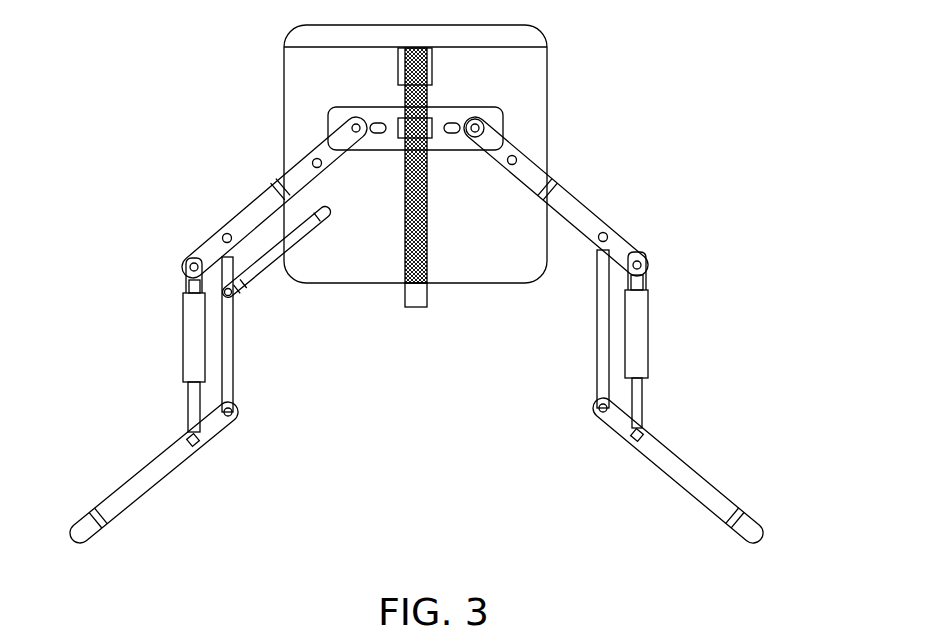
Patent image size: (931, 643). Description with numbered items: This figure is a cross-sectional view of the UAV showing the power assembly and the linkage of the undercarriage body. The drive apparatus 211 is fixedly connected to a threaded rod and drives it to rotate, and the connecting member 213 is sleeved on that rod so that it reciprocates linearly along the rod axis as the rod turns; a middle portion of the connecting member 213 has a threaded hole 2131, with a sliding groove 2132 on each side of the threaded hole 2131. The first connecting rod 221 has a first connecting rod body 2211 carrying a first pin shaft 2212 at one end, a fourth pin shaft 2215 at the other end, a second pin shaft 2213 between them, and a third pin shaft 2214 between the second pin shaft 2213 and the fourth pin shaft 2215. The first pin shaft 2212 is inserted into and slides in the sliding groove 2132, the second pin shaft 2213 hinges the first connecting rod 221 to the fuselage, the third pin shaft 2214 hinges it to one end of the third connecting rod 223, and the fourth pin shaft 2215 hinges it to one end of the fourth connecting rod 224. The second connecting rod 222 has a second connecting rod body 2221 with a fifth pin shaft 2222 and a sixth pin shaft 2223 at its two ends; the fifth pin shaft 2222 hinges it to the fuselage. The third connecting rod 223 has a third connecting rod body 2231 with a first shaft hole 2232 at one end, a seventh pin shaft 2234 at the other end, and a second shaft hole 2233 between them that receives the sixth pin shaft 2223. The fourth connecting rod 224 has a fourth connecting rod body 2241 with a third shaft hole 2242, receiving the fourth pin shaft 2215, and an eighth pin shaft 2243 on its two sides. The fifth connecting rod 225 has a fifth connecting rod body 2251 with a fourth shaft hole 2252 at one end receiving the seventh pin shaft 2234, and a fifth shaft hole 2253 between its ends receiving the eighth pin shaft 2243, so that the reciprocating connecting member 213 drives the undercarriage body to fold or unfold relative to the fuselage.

The drive apparatus 211 is at (545, 44).
The connecting member 213 is at (291, 160).
The threaded hole 2131 is at (398, 62).
The sliding groove 2132 is at (400, 122).
The first connecting rod 221 is at (603, 178).
The first connecting rod body 2211 is at (560, 190).
The first pin shaft 2212 is at (500, 118).
The second pin shaft 2213 is at (520, 152).
The third pin shaft 2214 is at (620, 238).
The fourth pin shaft 2215 is at (640, 258).
The second connecting rod 222 is at (646, 333).
The second connecting rod body 2221 is at (513, 225).
The fifth pin shaft 2222 is at (612, 362).
The sixth pin shaft 2223 is at (648, 282).
The third connecting rod 223 is at (145, 337).
The third connecting rod body 2231 is at (228, 323).
The first shaft hole 2232 is at (238, 240).
The second shaft hole 2233 is at (185, 268).
The seventh pin shaft 2234 is at (192, 337).
The fourth connecting rod 224 is at (238, 375).
The fourth connecting rod body 2241 is at (233, 338).
The third shaft hole 2242 is at (245, 286).
The eighth pin shaft 2243 is at (247, 416).
The fifth connecting rod 225 is at (701, 398).
The fifth connecting rod body 2251 is at (680, 457).
The fourth shaft hole 2252 is at (627, 396).
The fifth shaft hole 2253 is at (643, 424).